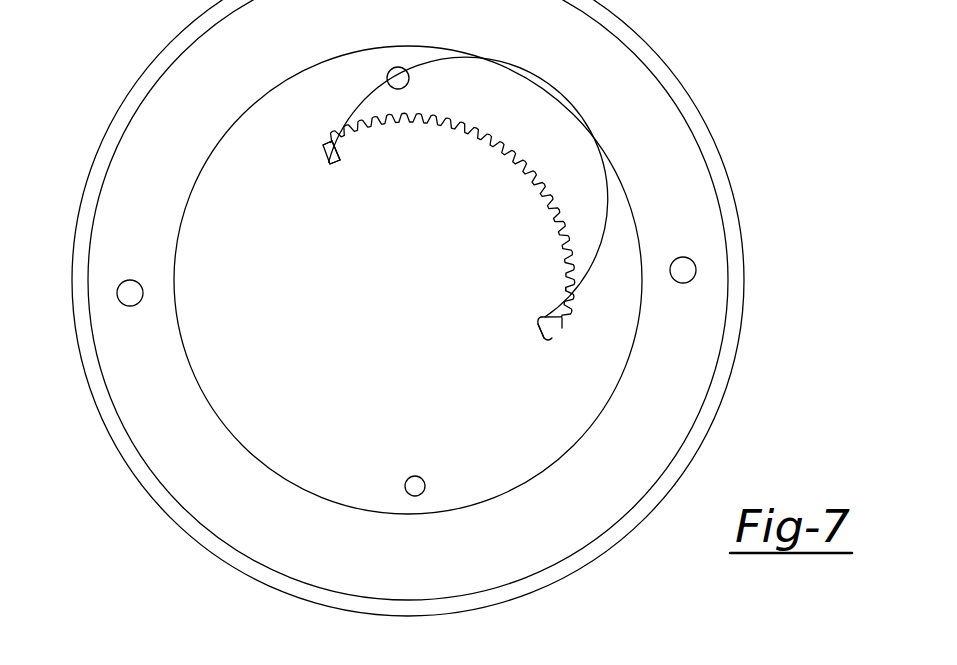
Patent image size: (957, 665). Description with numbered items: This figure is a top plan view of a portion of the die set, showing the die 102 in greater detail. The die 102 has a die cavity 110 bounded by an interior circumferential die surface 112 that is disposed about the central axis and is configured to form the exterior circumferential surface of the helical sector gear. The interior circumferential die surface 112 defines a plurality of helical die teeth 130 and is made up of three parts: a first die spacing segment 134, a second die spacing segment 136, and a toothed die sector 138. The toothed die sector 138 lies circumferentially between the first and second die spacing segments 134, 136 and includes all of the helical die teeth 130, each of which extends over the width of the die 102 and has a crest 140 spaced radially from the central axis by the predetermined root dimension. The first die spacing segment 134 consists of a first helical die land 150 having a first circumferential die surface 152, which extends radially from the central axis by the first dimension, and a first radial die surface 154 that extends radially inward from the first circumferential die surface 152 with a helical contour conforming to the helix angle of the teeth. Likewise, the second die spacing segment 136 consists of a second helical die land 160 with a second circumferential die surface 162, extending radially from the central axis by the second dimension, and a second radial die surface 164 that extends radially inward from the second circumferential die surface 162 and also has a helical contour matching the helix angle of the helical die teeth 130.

The die 102 is at (240, 378).
The die cavity 110 is at (342, 262).
The interior circumferential die surface 112 is at (376, 417).
The helical die teeth 130 is at (485, 128).
The first die spacing segment 134 is at (570, 352).
The second die spacing segment 136 is at (315, 139).
The toothed die sector 138 is at (555, 188).
The crest 140 is at (573, 282).
The first helical die land 150 is at (562, 328).
The first circumferential die surface 152 is at (562, 313).
The first radial die surface 154 is at (550, 340).
The second helical die land 160 is at (329, 161).
The second circumferential die surface 162 is at (327, 143).
The second radial die surface 164 is at (338, 156).